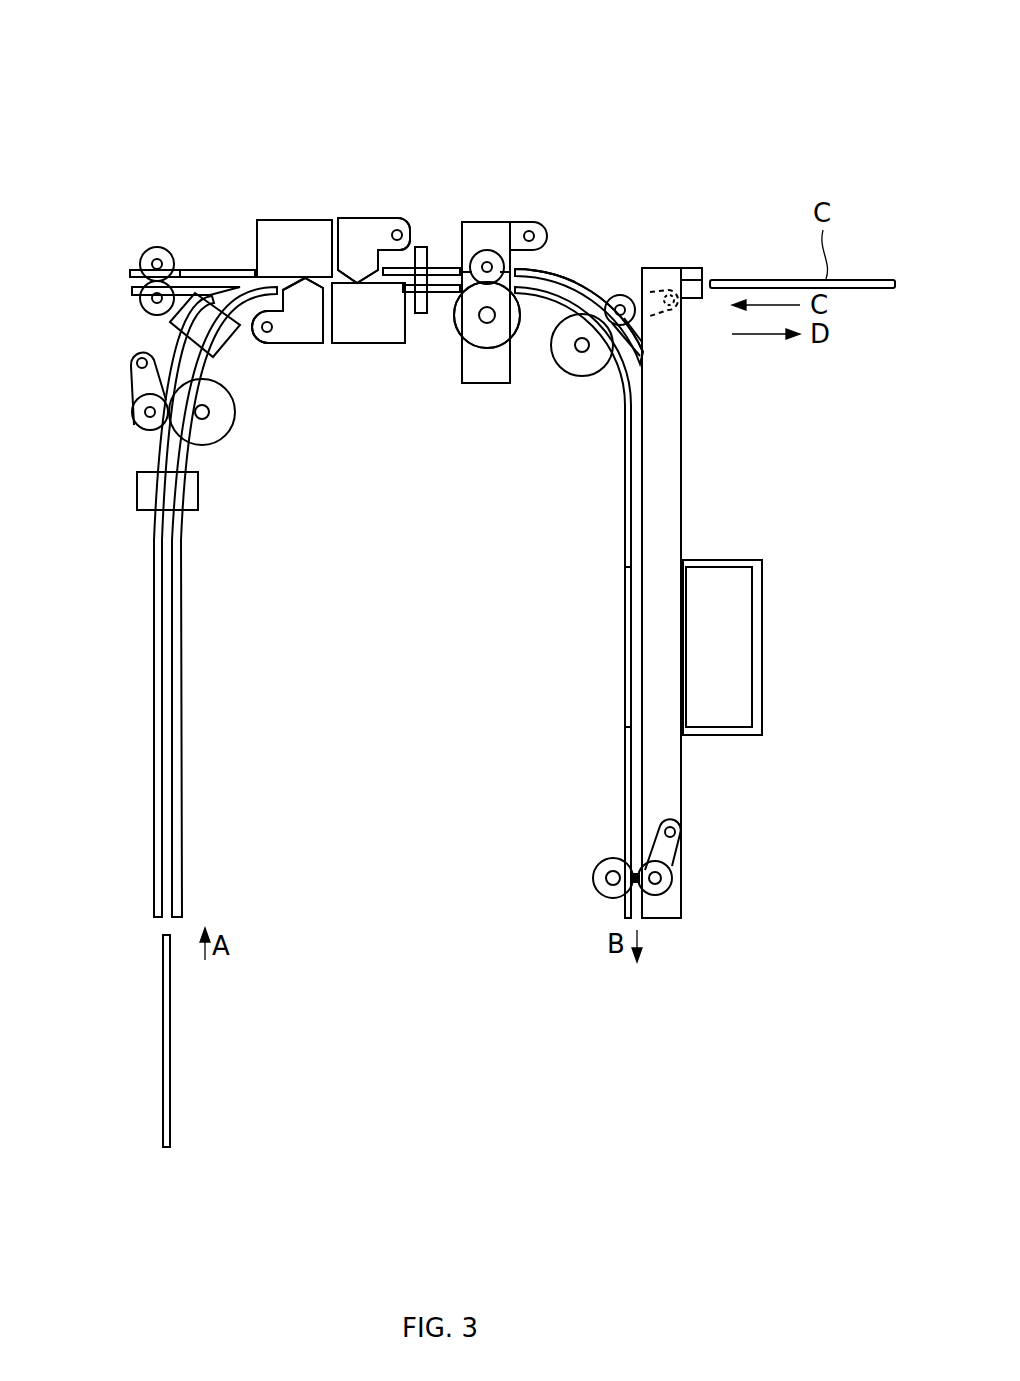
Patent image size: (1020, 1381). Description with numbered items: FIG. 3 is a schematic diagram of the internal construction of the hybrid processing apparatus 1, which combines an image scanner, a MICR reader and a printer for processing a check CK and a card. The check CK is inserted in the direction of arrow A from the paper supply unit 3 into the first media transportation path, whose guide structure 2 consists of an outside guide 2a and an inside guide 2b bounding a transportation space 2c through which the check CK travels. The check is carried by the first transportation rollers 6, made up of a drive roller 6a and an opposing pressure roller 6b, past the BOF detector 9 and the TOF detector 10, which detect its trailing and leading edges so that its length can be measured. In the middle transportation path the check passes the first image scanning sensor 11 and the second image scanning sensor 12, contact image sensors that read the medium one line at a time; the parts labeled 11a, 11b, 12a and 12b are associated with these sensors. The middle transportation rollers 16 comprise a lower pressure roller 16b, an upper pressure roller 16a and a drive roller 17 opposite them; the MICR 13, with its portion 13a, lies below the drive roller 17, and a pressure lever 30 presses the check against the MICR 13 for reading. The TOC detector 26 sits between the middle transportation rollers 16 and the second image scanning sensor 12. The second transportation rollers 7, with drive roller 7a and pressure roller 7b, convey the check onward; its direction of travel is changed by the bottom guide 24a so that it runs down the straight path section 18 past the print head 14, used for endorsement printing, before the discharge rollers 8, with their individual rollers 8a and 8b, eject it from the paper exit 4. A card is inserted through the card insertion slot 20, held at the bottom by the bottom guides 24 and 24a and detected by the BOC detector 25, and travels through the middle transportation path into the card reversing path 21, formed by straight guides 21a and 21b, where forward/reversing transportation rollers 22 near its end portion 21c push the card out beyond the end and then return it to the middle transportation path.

The hybrid processing apparatus 1 is at (529, 96).
The sheet guide path 2 is at (672, 593).
The outside guide 2a is at (643, 430).
The inside guide 2b is at (627, 388).
The transportation space 2c is at (637, 410).
The paper supply unit 3 is at (188, 683).
The paper exit 4 is at (655, 942).
The first transportation rollers 6 is at (246, 428).
The drive roller 6a is at (222, 418).
The pressure roller 6b is at (157, 402).
The second transportation rollers 7 is at (587, 390).
The drive roller 7a is at (578, 370).
The pressure roller 7b is at (617, 360).
The discharge rollers 8 is at (670, 889).
The drive roller 8a is at (620, 900).
The pinch roller 8b is at (670, 847).
The BOF detector 9 is at (198, 497).
The TOF detector 10 is at (227, 338).
The first image scanning sensor 11 is at (283, 221).
The platen 11a is at (305, 342).
The platen 11b is at (302, 356).
The second image scanning sensor 12 is at (392, 343).
The platen 12a is at (357, 227).
The platen 12b is at (360, 203).
The MICR 13 is at (480, 384).
The holder side wall 13a is at (513, 307).
The print head 14 is at (733, 575).
The middle transportation rollers 16 is at (484, 215).
The upper pressure roller 16a is at (470, 286).
The lower pressure roller 16b is at (489, 236).
The drive roller 17 is at (517, 204).
The guide section 18 is at (618, 567).
The card insertion slot 20 is at (611, 266).
The card reversing path 21 is at (207, 285).
The straight guide 21a is at (223, 276).
The straight guide 21b is at (163, 262).
The end portion 21c is at (133, 270).
The forward/reversing transportation rollers 22 is at (138, 306).
The bottom guide 24 is at (662, 267).
The bottom guide 24a is at (553, 278).
The BOC detector 25 is at (690, 267).
The TOC detector 26 is at (420, 246).
The pressure lever 30 is at (542, 222).
The check CK is at (171, 1025).